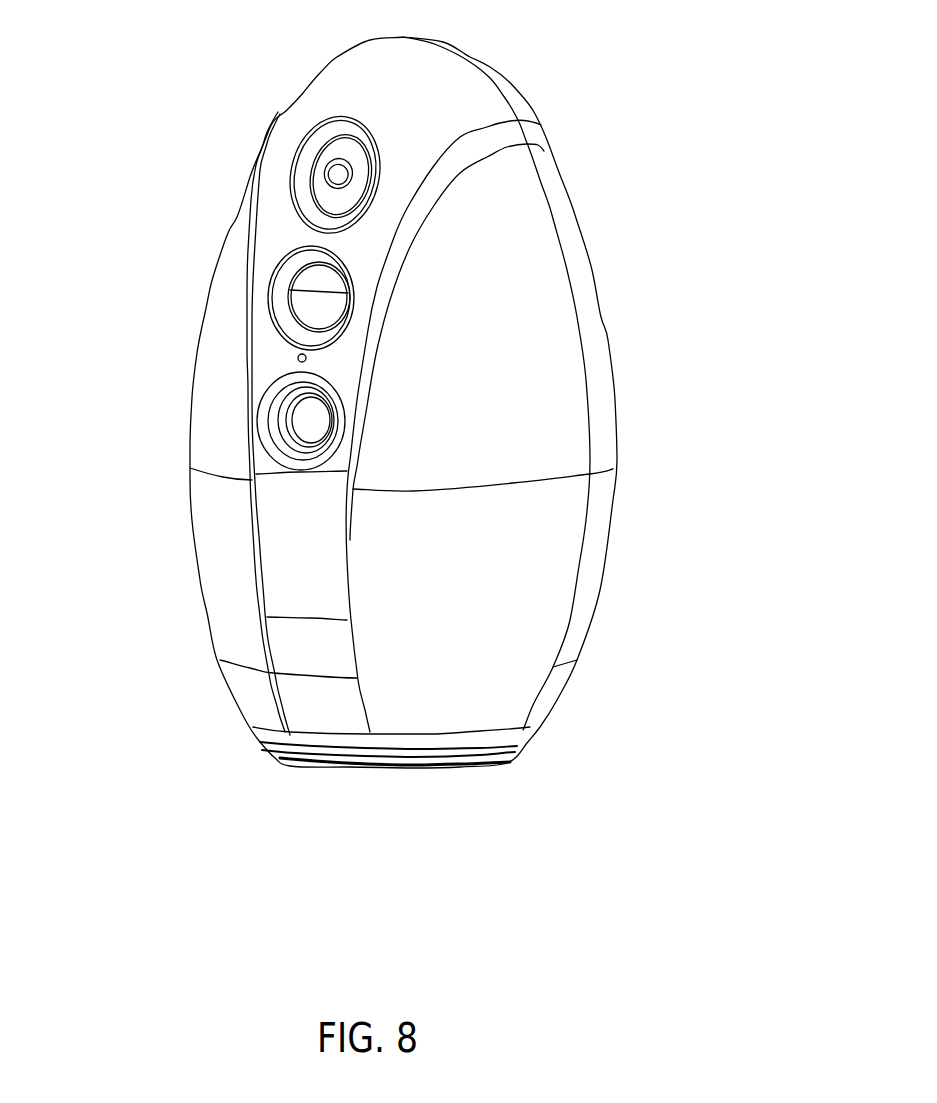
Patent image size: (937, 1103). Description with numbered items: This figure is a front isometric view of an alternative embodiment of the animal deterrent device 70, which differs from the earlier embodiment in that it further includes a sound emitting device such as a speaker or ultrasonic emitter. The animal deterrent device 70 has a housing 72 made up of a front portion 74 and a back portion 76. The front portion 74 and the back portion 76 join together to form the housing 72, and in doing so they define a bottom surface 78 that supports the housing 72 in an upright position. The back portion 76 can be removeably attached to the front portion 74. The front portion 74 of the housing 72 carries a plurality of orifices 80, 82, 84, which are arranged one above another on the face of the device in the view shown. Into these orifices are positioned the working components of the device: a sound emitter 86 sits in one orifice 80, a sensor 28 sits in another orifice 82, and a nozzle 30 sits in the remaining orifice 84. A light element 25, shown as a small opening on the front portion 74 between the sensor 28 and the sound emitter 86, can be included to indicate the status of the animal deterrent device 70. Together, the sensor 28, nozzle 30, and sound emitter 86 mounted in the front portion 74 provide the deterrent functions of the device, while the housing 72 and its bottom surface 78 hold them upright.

The animal deterrent device 70 is at (672, 91).
The housing 72 is at (425, 42).
The front portion 74 is at (320, 80).
The back portion 76 is at (572, 227).
The bottom surface 78 is at (283, 758).
The nozzle 30 is at (327, 167).
The orifice 84 is at (290, 217).
The sensor 28 is at (298, 290).
The orifice 82 is at (272, 328).
The light element 25 is at (298, 358).
The sound emitter 86 is at (290, 407).
The orifice 80 is at (275, 450).